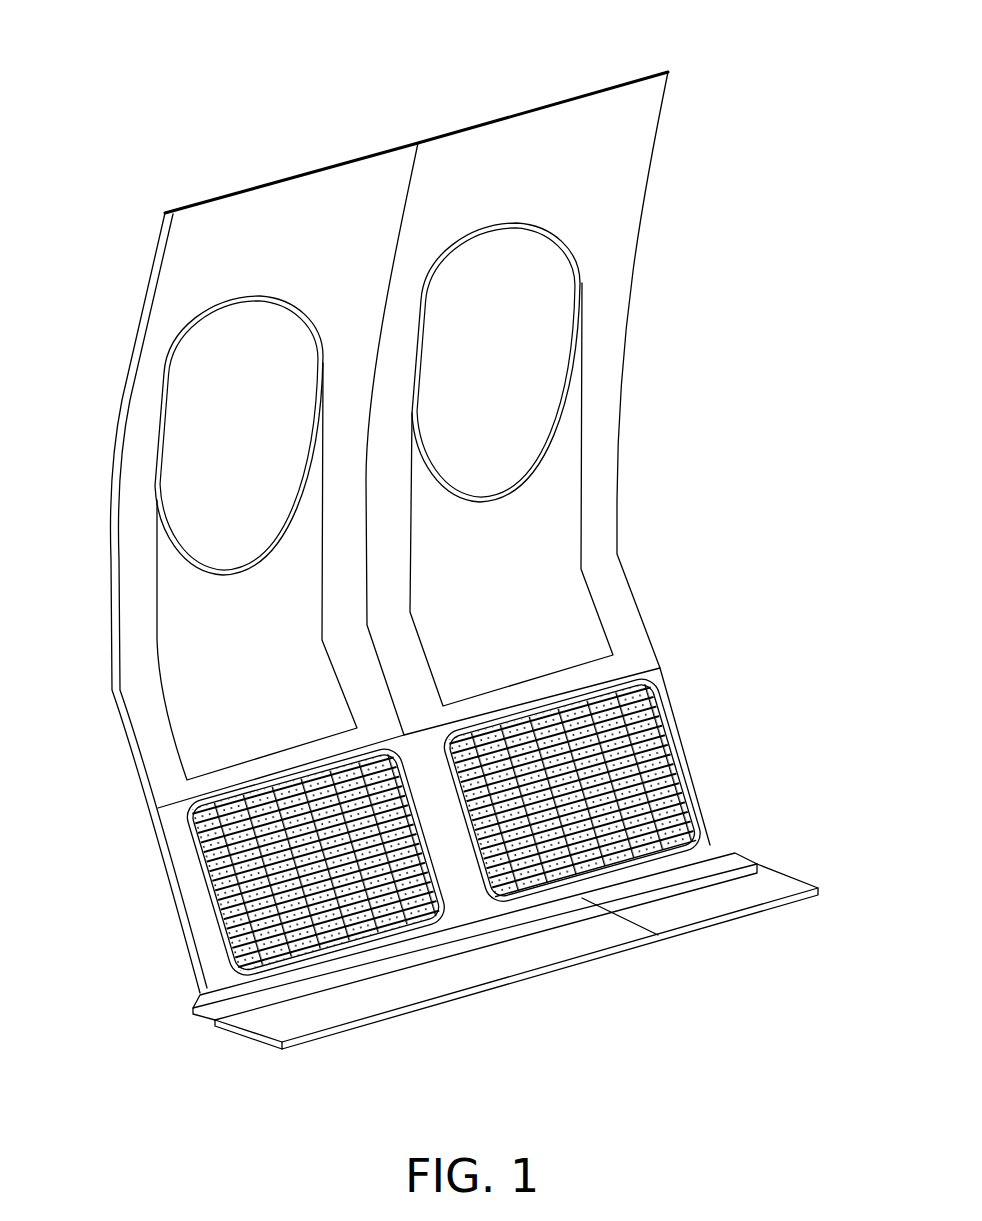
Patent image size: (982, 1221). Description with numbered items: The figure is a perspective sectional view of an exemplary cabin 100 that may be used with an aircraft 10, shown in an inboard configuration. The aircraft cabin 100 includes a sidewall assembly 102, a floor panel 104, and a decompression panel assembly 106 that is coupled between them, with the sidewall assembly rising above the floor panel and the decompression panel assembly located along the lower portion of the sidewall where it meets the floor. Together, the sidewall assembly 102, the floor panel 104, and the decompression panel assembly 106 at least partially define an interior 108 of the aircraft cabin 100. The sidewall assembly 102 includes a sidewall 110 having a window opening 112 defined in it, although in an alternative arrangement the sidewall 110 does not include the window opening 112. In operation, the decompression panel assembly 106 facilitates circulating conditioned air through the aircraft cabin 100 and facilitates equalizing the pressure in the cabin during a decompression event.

The aircraft 10 is at (112, 160).
The cabin 100 is at (696, 84).
The sidewall assembly 102 is at (661, 570).
The floor panel 104 is at (780, 882).
The decompression panel assembly 106 is at (704, 756).
The interior 108 is at (736, 368).
The sidewall 110 is at (627, 133).
The window opening 112 is at (522, 380).